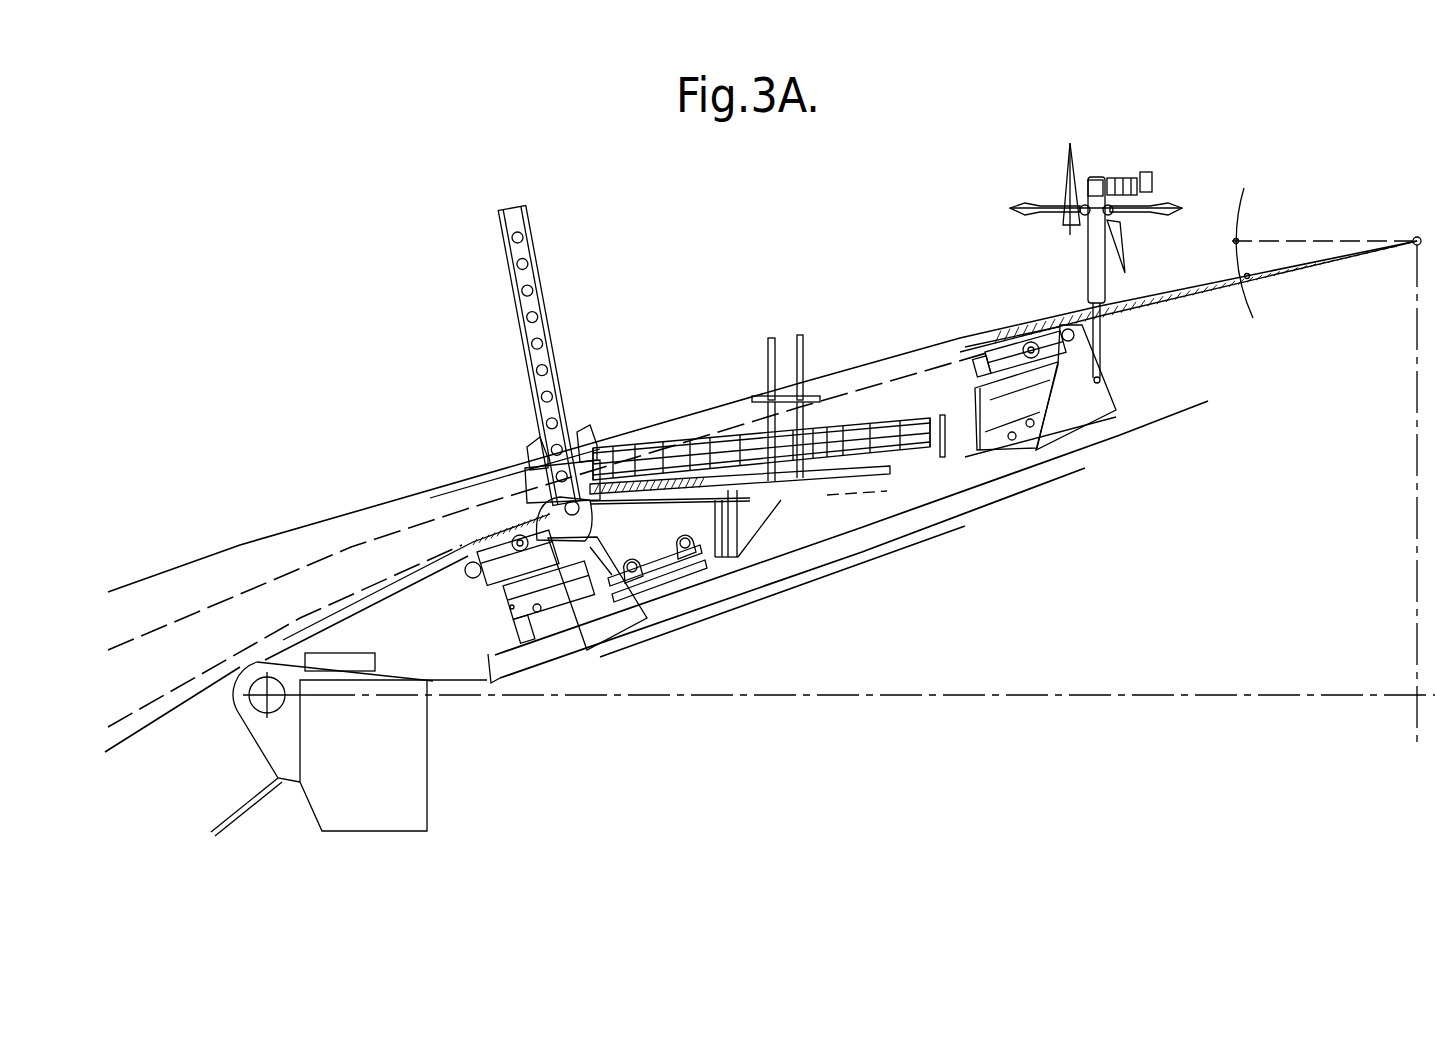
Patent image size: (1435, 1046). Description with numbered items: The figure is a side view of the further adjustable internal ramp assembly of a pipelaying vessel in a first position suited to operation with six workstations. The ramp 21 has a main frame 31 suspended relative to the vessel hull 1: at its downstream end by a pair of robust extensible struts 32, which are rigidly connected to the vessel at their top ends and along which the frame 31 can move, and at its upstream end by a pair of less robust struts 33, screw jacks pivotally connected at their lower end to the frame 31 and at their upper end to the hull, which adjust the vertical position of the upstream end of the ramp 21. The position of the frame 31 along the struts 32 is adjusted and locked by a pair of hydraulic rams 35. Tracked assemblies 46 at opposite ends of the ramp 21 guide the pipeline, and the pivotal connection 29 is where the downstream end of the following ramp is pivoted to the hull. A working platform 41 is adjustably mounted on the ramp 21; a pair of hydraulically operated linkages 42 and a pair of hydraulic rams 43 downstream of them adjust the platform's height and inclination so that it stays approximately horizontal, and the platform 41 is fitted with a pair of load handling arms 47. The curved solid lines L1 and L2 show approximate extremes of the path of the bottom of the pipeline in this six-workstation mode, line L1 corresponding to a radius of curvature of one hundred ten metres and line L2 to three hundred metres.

The vessel hull 1 is at (1003, 660).
The ramp 21 is at (955, 525).
The pivotal connection 29 is at (262, 710).
The main frame 31 is at (837, 520).
The extensible struts 32 is at (522, 240).
The struts 33 is at (1088, 270).
The hydraulic rams 35 is at (538, 485).
The working platform 41 is at (785, 487).
The hydraulically operated linkages 42 is at (737, 558).
The hydraulic rams 43 is at (693, 555).
The tracked assemblies 46 is at (497, 530).
The load handling arms 47 is at (771, 338).
The curved solid line L1 is at (170, 713).
The curved solid line L2 is at (240, 545).